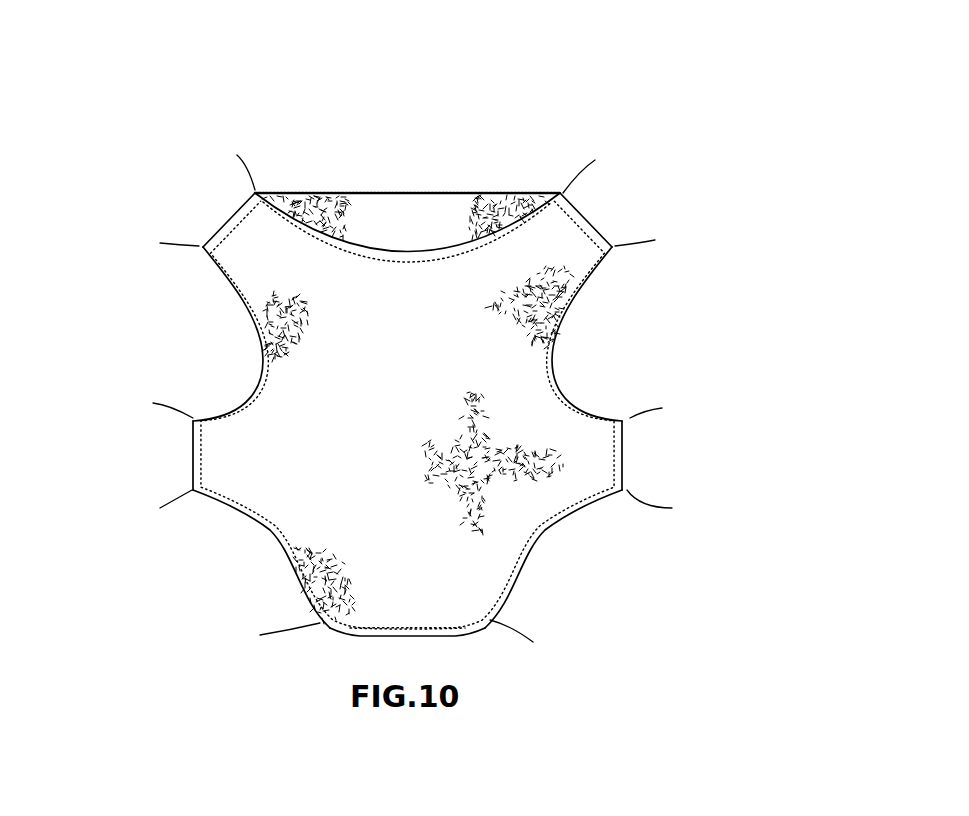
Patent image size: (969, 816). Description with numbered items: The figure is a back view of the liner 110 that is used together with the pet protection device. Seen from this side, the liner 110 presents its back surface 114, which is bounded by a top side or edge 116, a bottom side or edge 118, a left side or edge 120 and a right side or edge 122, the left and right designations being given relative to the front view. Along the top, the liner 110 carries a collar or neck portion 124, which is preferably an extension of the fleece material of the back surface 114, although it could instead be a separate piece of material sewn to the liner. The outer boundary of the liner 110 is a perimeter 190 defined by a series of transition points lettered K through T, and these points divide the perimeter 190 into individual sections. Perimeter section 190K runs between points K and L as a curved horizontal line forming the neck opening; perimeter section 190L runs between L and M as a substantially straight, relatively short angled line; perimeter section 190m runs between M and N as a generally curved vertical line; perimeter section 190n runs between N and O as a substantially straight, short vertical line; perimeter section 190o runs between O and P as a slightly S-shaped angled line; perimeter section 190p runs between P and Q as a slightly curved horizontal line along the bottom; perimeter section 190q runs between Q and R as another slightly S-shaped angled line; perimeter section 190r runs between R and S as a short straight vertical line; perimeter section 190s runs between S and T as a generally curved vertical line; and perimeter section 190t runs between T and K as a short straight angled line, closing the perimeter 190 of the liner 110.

The liner 110 is at (419, 360).
The back surface 114 is at (422, 355).
The top side or edge 116 is at (365, 248).
The bottom side or edge 118 is at (363, 638).
The left side or edge 120 is at (622, 346).
The right side or edge 122 is at (170, 356).
The collar or neck portion 124 is at (415, 210).
The perimeter 190 is at (609, 392).
The perimeter section 190K is at (412, 252).
The perimeter section 190L is at (225, 210).
The perimeter section 190m is at (258, 340).
The perimeter section 190n is at (188, 452).
The perimeter section 190o is at (267, 542).
The perimeter section 190p is at (427, 637).
The perimeter section 190q is at (541, 546).
The perimeter section 190r is at (628, 452).
The perimeter section 190s is at (560, 320).
The perimeter section 190t is at (590, 210).